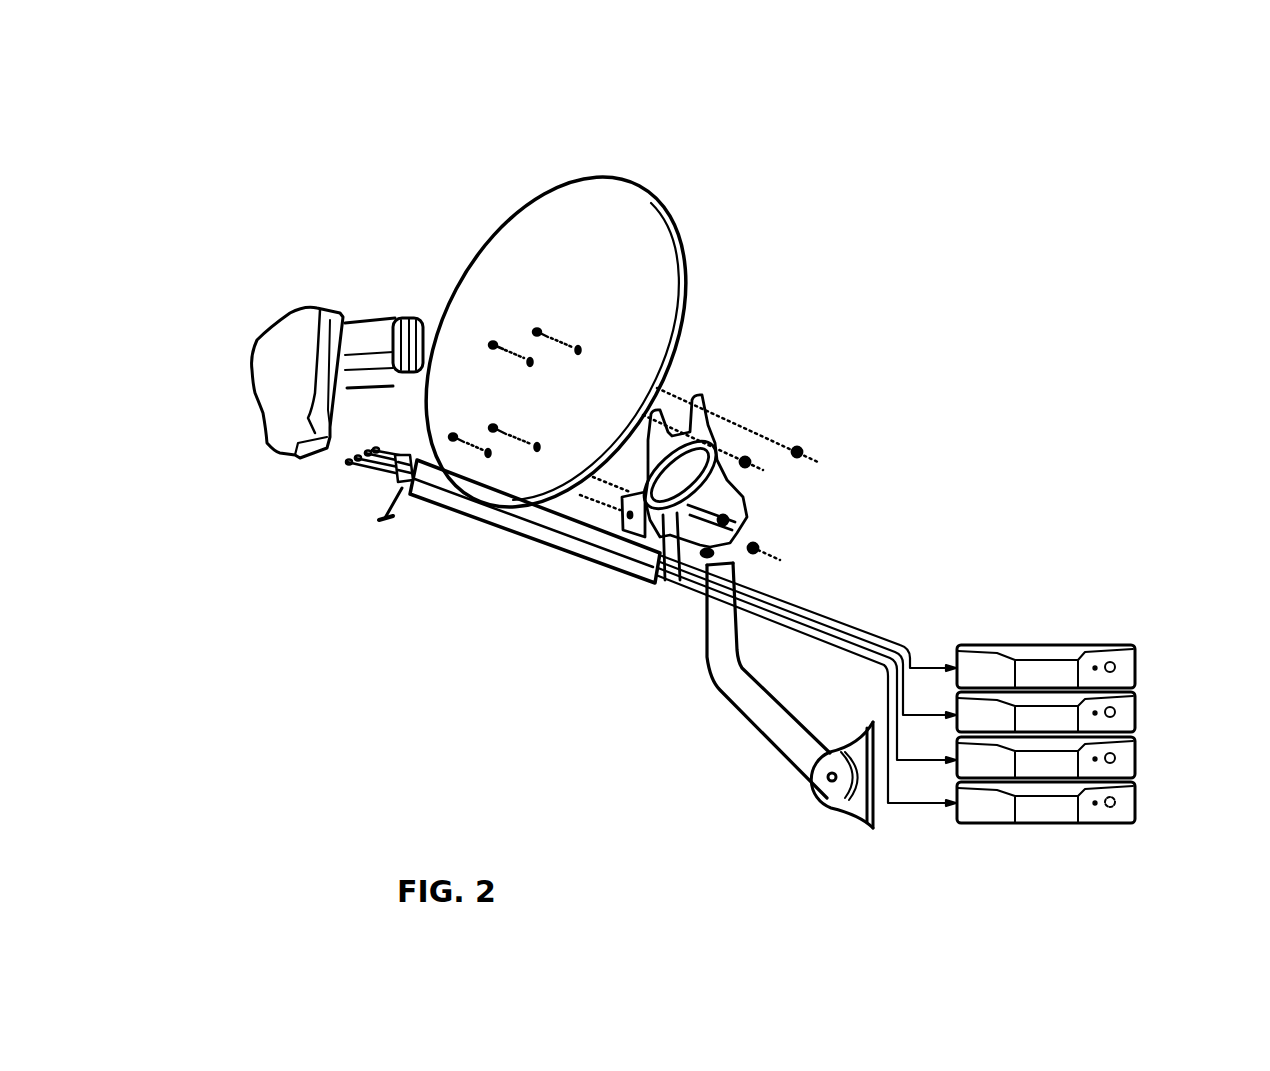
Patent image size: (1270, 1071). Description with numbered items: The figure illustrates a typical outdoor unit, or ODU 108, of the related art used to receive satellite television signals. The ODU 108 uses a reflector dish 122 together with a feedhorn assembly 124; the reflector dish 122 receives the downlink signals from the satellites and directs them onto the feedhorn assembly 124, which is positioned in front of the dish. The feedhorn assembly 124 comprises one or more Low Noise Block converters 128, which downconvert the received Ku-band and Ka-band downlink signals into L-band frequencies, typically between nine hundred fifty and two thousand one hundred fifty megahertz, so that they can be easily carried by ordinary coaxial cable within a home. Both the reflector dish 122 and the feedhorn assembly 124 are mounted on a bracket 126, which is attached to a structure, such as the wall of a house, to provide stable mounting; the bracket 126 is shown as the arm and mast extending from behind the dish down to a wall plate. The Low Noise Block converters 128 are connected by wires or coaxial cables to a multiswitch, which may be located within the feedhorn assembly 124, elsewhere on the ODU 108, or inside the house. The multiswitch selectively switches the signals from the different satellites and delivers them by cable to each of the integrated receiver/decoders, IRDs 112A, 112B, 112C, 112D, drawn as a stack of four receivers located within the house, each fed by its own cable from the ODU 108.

The ODU 108 is at (668, 105).
The reflector dish 122 is at (513, 220).
The feedhorn assembly 124 is at (305, 305).
The Low Noise Block converter 128 is at (370, 308).
The bracket 126 is at (577, 563).
The IRD 112A is at (1083, 642).
The IRD 112B is at (1137, 707).
The IRD 112C is at (1142, 757).
The IRD 112D is at (1142, 800).